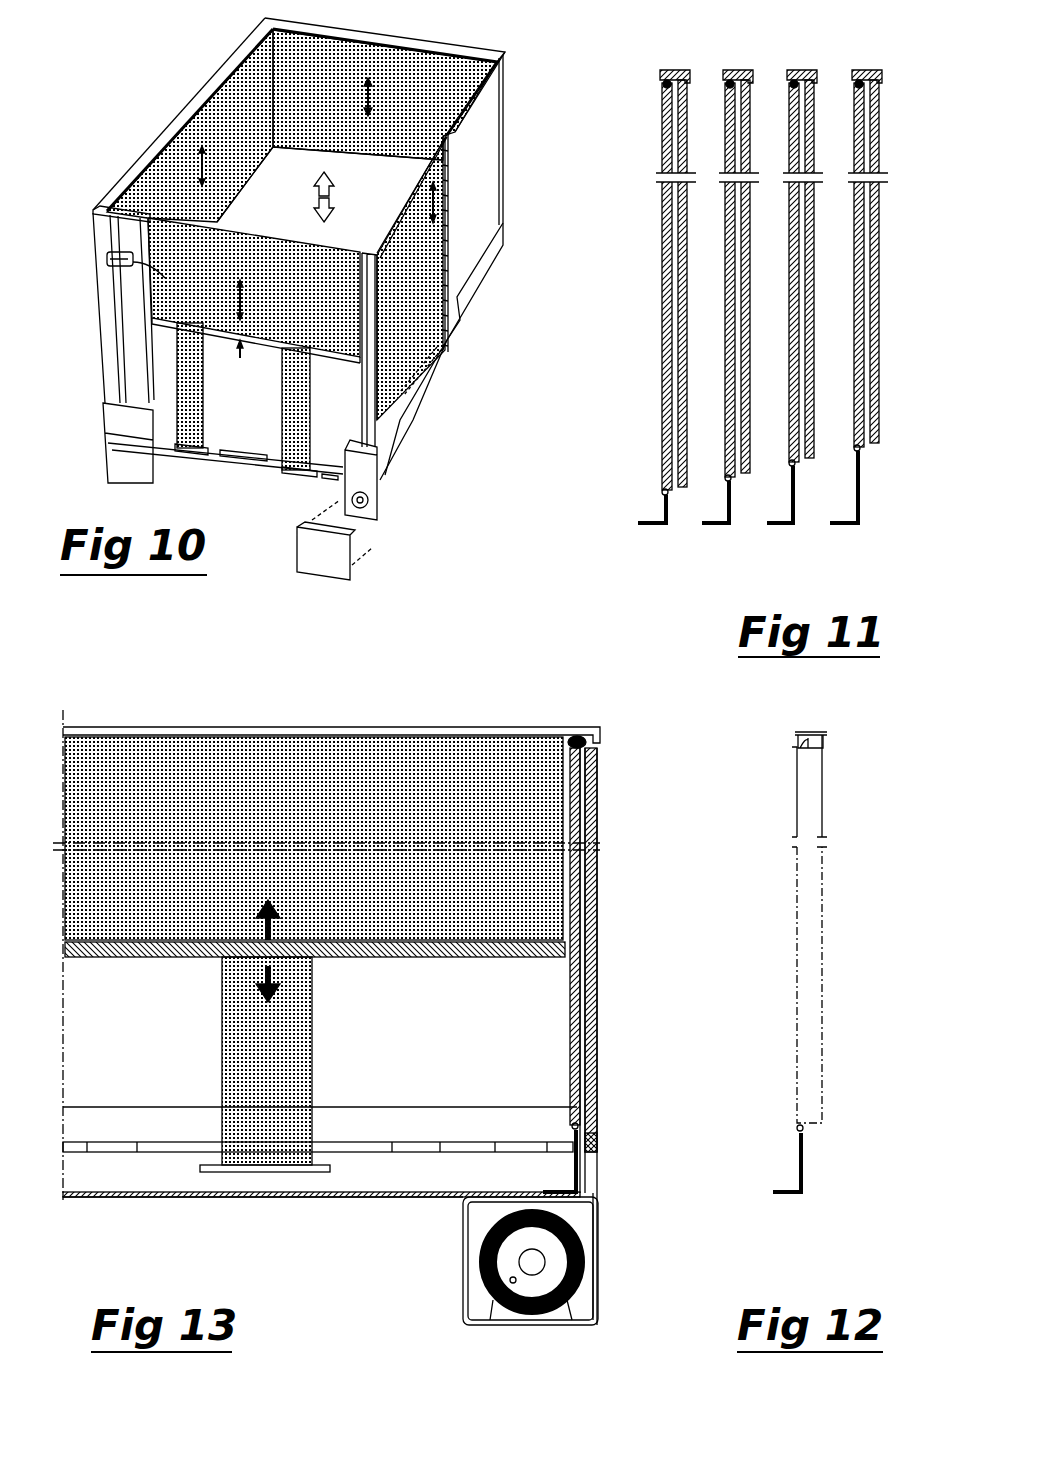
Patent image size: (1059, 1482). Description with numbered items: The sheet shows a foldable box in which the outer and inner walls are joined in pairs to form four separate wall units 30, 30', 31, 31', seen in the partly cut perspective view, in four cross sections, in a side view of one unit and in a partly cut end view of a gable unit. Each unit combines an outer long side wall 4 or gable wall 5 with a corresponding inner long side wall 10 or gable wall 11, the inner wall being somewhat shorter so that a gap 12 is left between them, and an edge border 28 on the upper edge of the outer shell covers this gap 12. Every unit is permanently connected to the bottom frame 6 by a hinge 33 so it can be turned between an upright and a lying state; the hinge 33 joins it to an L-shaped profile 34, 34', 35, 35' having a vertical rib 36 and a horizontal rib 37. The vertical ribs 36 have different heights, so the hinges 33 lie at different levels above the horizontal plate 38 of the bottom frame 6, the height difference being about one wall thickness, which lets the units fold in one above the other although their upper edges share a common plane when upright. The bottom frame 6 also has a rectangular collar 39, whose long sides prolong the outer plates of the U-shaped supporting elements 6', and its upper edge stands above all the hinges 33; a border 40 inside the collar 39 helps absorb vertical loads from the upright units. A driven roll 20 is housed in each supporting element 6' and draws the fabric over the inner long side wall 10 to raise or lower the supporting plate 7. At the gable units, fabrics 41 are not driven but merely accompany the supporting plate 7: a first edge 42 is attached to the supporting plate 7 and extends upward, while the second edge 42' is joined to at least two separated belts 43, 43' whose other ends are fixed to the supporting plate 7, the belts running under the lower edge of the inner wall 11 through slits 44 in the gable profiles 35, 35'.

In FIG. 10, the long side wall 4 is at (493, 137).
In FIG. 11, the long side wall 4 is at (812, 218).
In FIG. 13, the long side wall 4 is at (592, 972).
In FIG. 11, the gable wall 5 is at (685, 282).
In FIG. 10, the bottom frame 6 is at (468, 351).
In FIG. 13, the bottom frame 6 is at (263, 1257).
In FIG. 13, the supporting element 6' is at (512, 1277).
In FIG. 10, the supporting plate 7 is at (253, 193).
In FIG. 13, the supporting plate 7 is at (390, 953).
In FIG. 10, the long side wall of inner wall shell 10 is at (430, 253).
In FIG. 11, the long side wall of inner wall shell 10 is at (790, 215).
In FIG. 13, the long side wall of inner wall shell 10 is at (570, 993).
In FIG. 10, the gable wall of inner wall shell 11 is at (230, 432).
In FIG. 11, the gable wall of inner wall shell 11 is at (662, 312).
In FIG. 13, the gap 12 is at (583, 888).
In FIG. 13, the roll 20 is at (557, 1253).
In FIG. 13, the edge border 28 is at (580, 730).
In FIG. 10, the wall unit 30 is at (511, 193).
In FIG. 11, the wall unit 30 is at (806, 51).
In FIG. 12, the wall unit 30 is at (844, 927).
In FIG. 10, the wall unit 30' is at (183, 216).
In FIG. 11, the wall unit 30' is at (876, 51).
In FIG. 10, the wall unit 31 is at (254, 273).
In FIG. 11, the wall unit 31 is at (680, 51).
In FIG. 10, the wall unit 31' is at (441, 135).
In FIG. 11, the wall unit 31' is at (747, 51).
In FIG. 10, the hinge 33 is at (260, 453).
In FIG. 11, the hinge 33 is at (660, 490).
In FIG. 13, the hinge 33 is at (573, 1123).
In FIG. 11, the L-shaped profile 34 is at (774, 526).
In FIG. 11, the L-shaped profile 34' is at (878, 521).
In FIG. 11, the L-shaped profile 35 is at (636, 546).
In FIG. 11, the L-shaped profile 35' is at (699, 536).
In FIG. 11, the vertical rib 36 is at (792, 505).
In FIG. 12, the vertical rib 36 is at (802, 1157).
In FIG. 11, the horizontal rib 37 is at (837, 512).
In FIG. 12, the horizontal rib 37 is at (782, 1188).
In FIG. 13, the horizontal plate 38 is at (386, 1198).
In FIG. 13, the collar 39 is at (597, 1053).
In FIG. 13, the border 40 is at (597, 1133).
In FIG. 10, the fabric 41 is at (328, 48).
In FIG. 10, the first edge 42 is at (342, 115).
In FIG. 10, the second edge 42' is at (251, 363).
In FIG. 10, the belt 43 is at (215, 385).
In FIG. 13, the belt 43 is at (246, 1064).
In FIG. 10, the belt 43' is at (326, 409).
In FIG. 10, the slit 44 is at (293, 477).